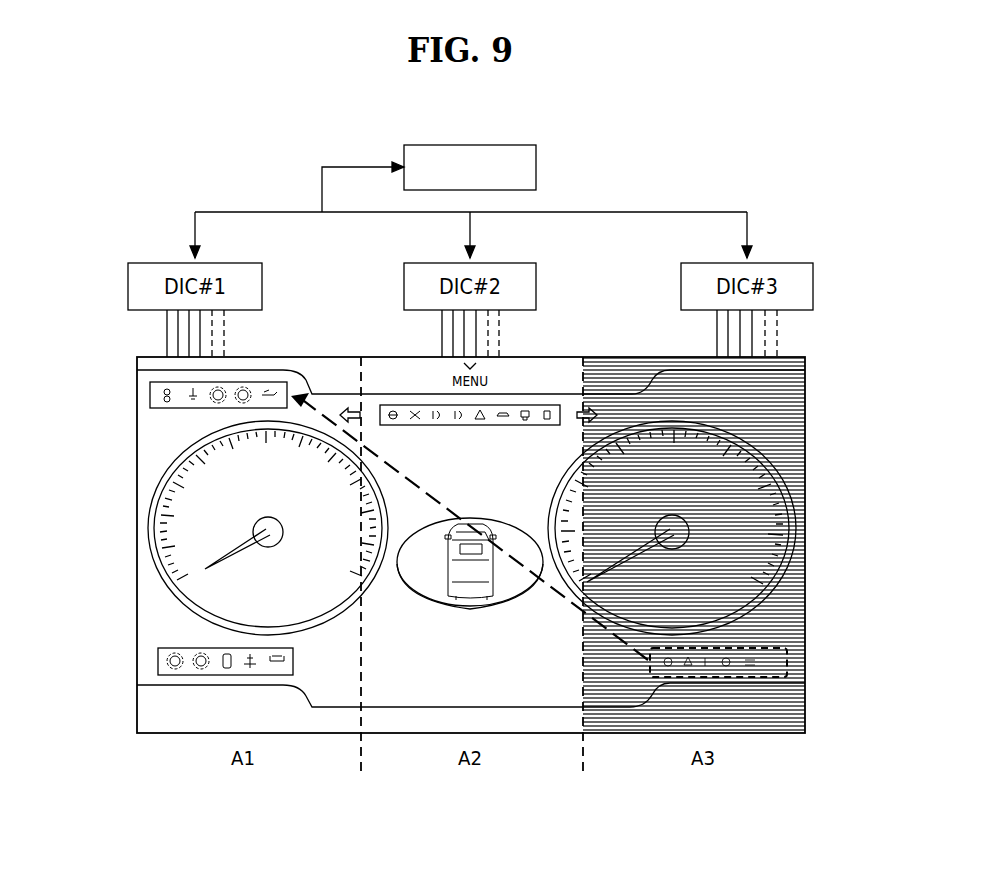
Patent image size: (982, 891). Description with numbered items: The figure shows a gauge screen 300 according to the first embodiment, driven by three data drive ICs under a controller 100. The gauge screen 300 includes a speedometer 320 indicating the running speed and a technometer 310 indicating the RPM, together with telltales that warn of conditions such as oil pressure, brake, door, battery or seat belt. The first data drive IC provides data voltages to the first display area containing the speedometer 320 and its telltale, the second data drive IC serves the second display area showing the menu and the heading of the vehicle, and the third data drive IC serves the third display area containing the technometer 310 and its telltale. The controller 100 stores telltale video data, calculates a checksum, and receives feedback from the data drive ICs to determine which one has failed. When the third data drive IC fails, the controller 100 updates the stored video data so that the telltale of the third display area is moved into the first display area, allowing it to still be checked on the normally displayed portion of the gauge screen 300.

The controller 100 is at (452, 176).
The gauge screen 300 is at (633, 357).
The technometer 310 is at (797, 525).
The speedometer 320 is at (157, 526).